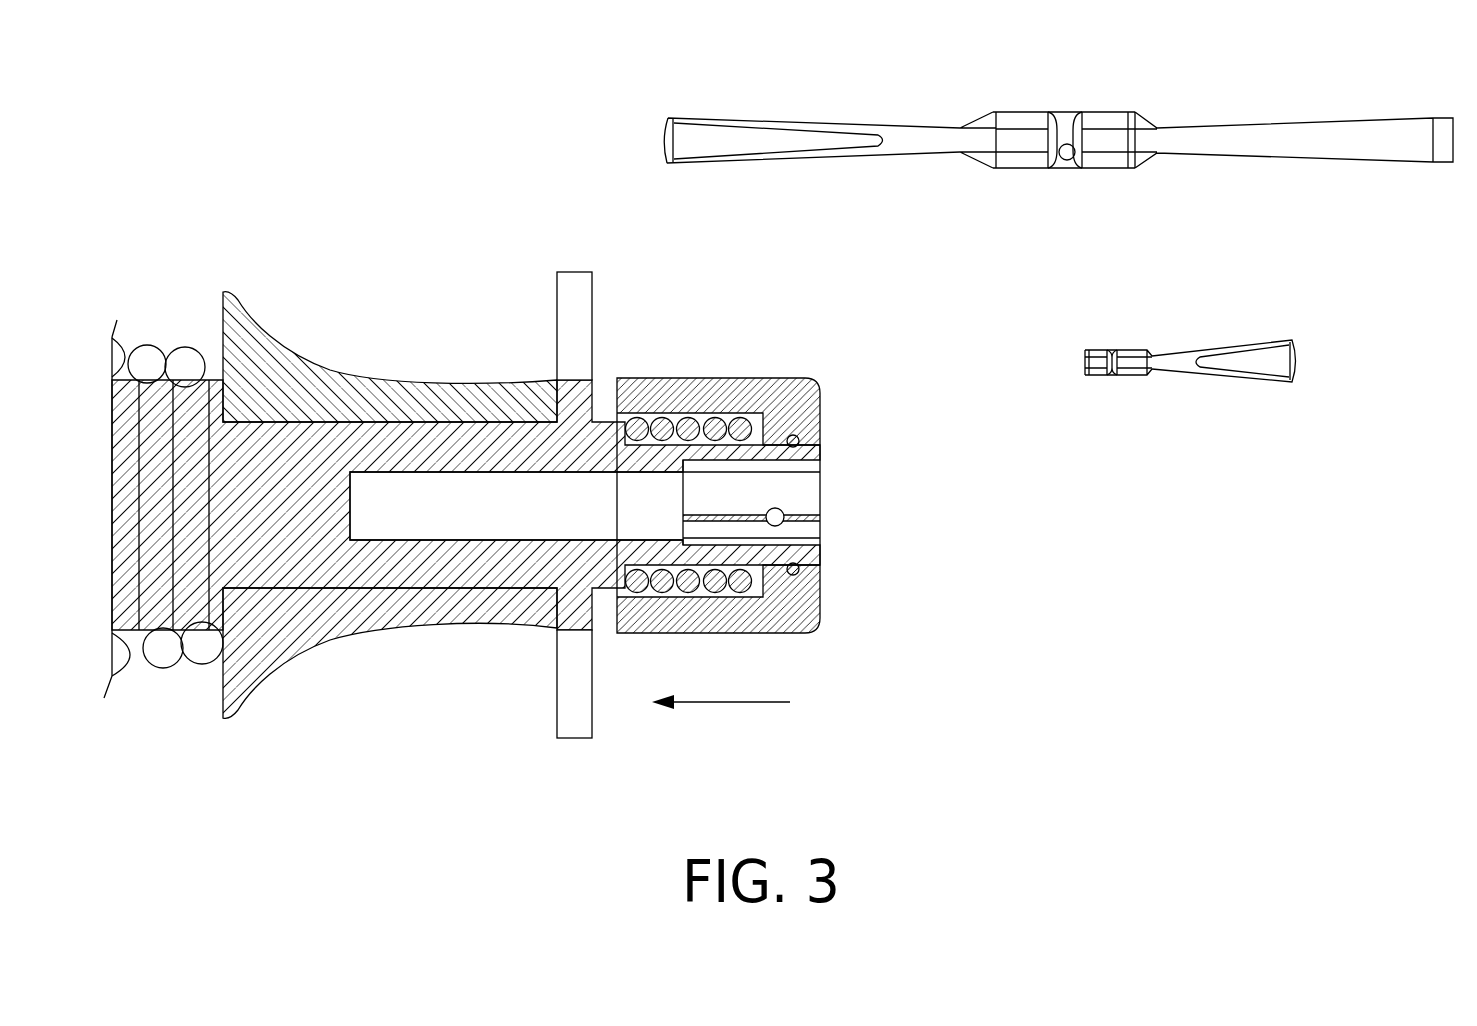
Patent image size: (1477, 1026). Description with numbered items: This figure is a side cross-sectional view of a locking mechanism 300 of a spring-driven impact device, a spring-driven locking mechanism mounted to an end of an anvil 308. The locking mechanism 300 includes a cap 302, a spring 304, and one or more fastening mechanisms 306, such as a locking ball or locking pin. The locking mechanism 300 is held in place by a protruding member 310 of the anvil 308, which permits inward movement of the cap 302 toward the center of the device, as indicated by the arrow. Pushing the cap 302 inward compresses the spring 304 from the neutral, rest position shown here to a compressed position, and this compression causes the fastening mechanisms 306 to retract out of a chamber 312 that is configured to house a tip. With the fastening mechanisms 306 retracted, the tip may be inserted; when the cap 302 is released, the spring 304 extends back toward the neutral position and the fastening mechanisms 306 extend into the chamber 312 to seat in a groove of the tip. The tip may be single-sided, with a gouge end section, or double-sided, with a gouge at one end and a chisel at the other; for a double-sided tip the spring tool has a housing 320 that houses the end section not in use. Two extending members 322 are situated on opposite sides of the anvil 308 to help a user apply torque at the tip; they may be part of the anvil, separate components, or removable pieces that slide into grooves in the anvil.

The locking mechanism 300 is at (176, 74).
The cap 302 is at (806, 625).
The spring 304 is at (716, 425).
The fastening mechanism 306 is at (783, 521).
The anvil 308 is at (815, 452).
The protruding member 310 is at (796, 440).
The chamber 312 is at (800, 490).
The housing 320 is at (660, 500).
The extending member 322 is at (567, 357).